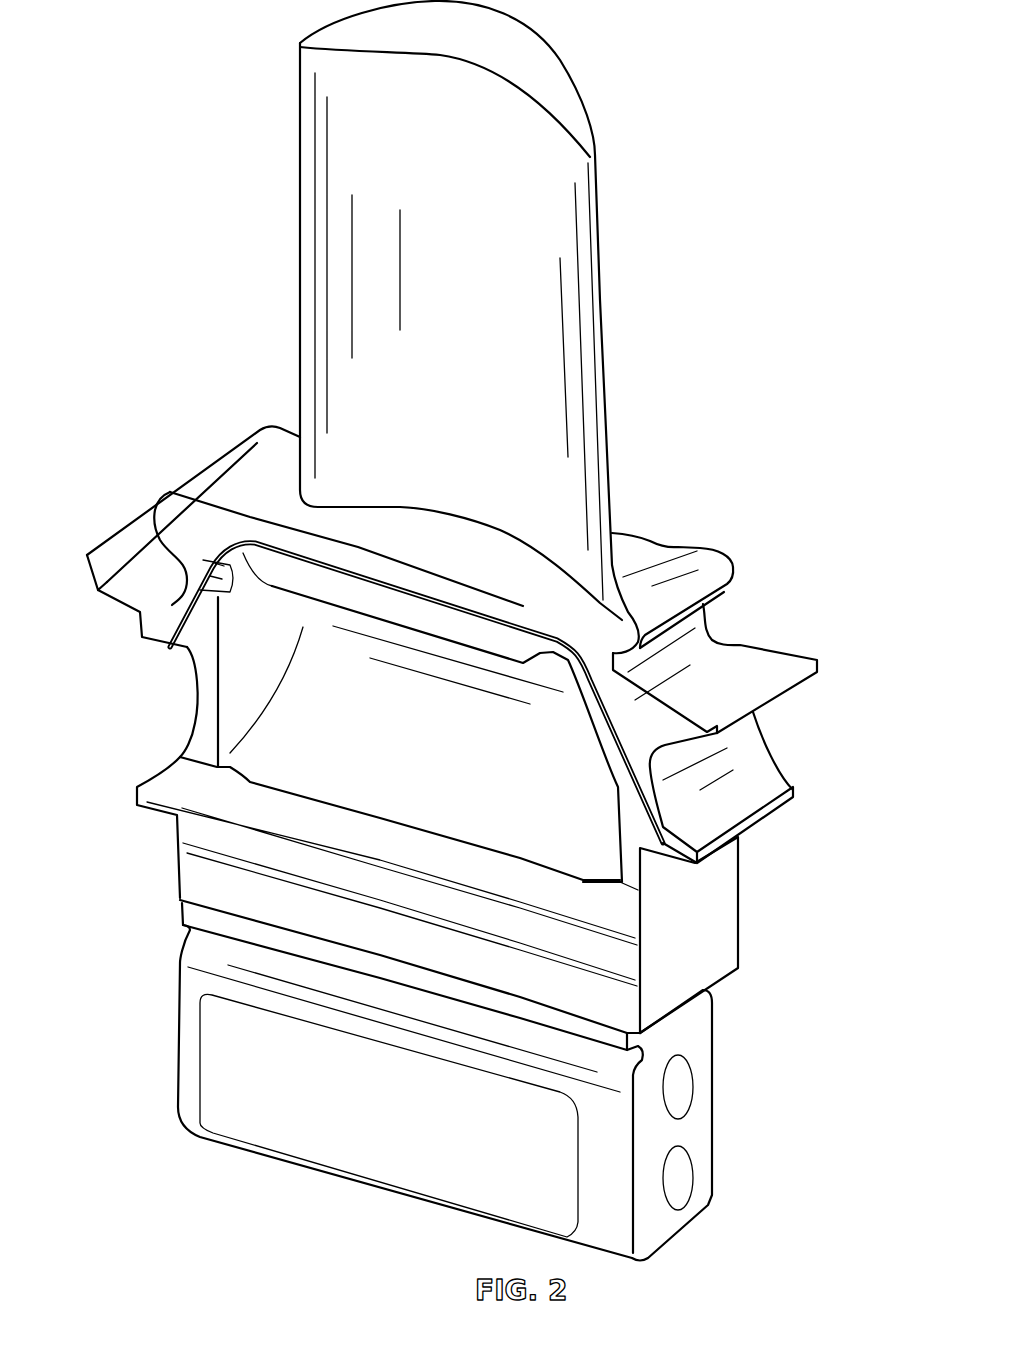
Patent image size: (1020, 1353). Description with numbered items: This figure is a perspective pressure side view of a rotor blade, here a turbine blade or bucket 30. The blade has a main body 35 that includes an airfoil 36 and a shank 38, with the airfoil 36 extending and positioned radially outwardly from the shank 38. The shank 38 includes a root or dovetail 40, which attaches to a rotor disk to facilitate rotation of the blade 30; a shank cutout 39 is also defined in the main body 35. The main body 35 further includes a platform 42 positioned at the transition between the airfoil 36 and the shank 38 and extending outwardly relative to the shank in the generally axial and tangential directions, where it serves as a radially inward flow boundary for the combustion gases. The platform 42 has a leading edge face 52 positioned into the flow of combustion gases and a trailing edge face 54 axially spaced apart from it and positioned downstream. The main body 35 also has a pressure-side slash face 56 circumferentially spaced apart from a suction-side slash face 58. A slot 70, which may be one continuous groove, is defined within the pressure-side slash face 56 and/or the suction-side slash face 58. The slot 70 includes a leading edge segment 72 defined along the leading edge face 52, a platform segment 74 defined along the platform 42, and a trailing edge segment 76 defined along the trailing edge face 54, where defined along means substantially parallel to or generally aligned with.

The turbine blade 30 is at (160, 174).
The main body 35 is at (852, 556).
The airfoil 36 is at (560, 229).
The shank 38 is at (325, 745).
The shank cutout 39 is at (585, 850).
The dovetail 40 is at (460, 967).
The platform 42 is at (257, 457).
The leading edge face 52 is at (185, 480).
The trailing edge face 54 is at (708, 633).
The pressure-side slash face 56 is at (707, 558).
The suction-side slash face 58 is at (645, 538).
The slot 70 is at (198, 560).
The leading edge segment 72 is at (177, 598).
The platform segment 74 is at (272, 543).
The trailing edge segment 76 is at (717, 743).